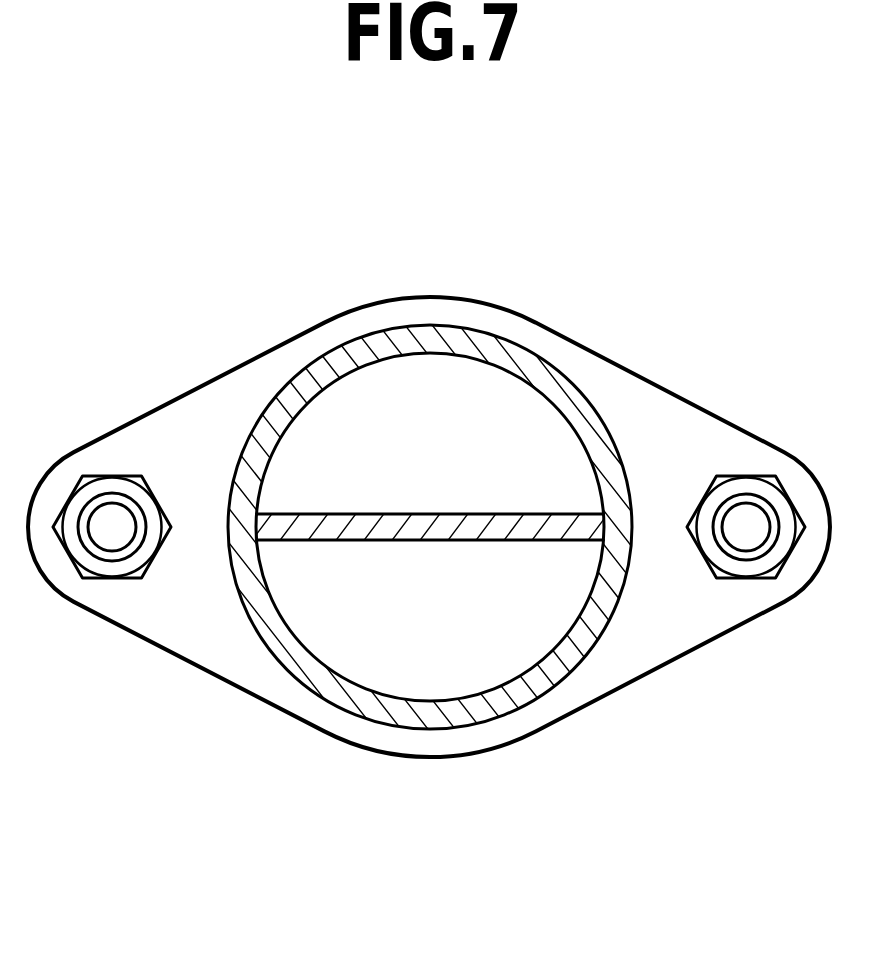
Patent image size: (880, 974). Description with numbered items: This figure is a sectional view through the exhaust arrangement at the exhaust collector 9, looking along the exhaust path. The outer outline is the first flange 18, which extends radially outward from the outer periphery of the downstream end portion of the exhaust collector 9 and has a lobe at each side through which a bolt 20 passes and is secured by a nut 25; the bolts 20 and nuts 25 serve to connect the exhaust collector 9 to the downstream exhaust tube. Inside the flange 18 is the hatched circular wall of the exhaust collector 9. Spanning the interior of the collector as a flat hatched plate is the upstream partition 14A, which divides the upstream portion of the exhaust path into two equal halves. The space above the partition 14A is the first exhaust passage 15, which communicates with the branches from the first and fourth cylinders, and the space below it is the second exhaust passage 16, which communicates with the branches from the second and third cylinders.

The first flange 18 is at (442, 308).
The exhaust collector 9 is at (552, 390).
The upstream partition 14A is at (382, 513).
The first exhaust passage 15 is at (525, 478).
The second exhaust passage 16 is at (477, 617).
The nut 25 is at (110, 487).
The bolt 20 is at (107, 530).